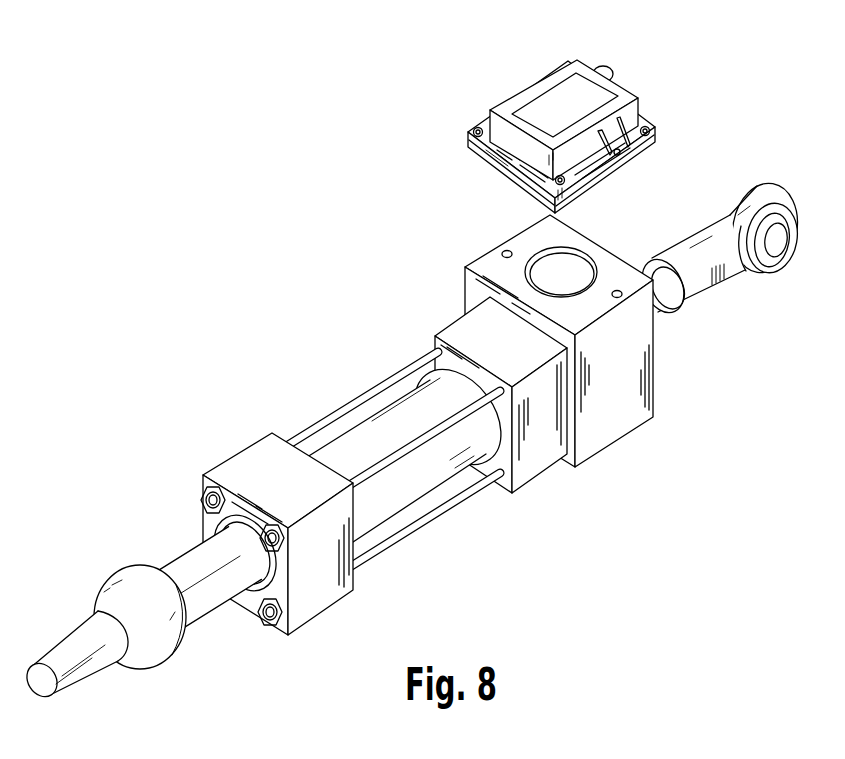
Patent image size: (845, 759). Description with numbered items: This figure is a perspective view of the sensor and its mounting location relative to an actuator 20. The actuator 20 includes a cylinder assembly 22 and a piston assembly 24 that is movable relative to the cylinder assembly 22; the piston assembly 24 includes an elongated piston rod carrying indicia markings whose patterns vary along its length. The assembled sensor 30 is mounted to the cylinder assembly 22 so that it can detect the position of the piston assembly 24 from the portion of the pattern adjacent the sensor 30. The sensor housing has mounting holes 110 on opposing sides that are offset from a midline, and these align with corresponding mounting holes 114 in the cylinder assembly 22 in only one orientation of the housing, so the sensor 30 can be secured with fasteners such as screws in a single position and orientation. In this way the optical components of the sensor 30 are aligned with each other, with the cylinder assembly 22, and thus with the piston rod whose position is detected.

The actuator 20 is at (412, 373).
The cylinder assembly 22 is at (336, 641).
The piston assembly 24 is at (786, 166).
The sensor 30 is at (590, 123).
The mounting holes 110 is at (622, 152).
The mounting holes 114 is at (503, 252).